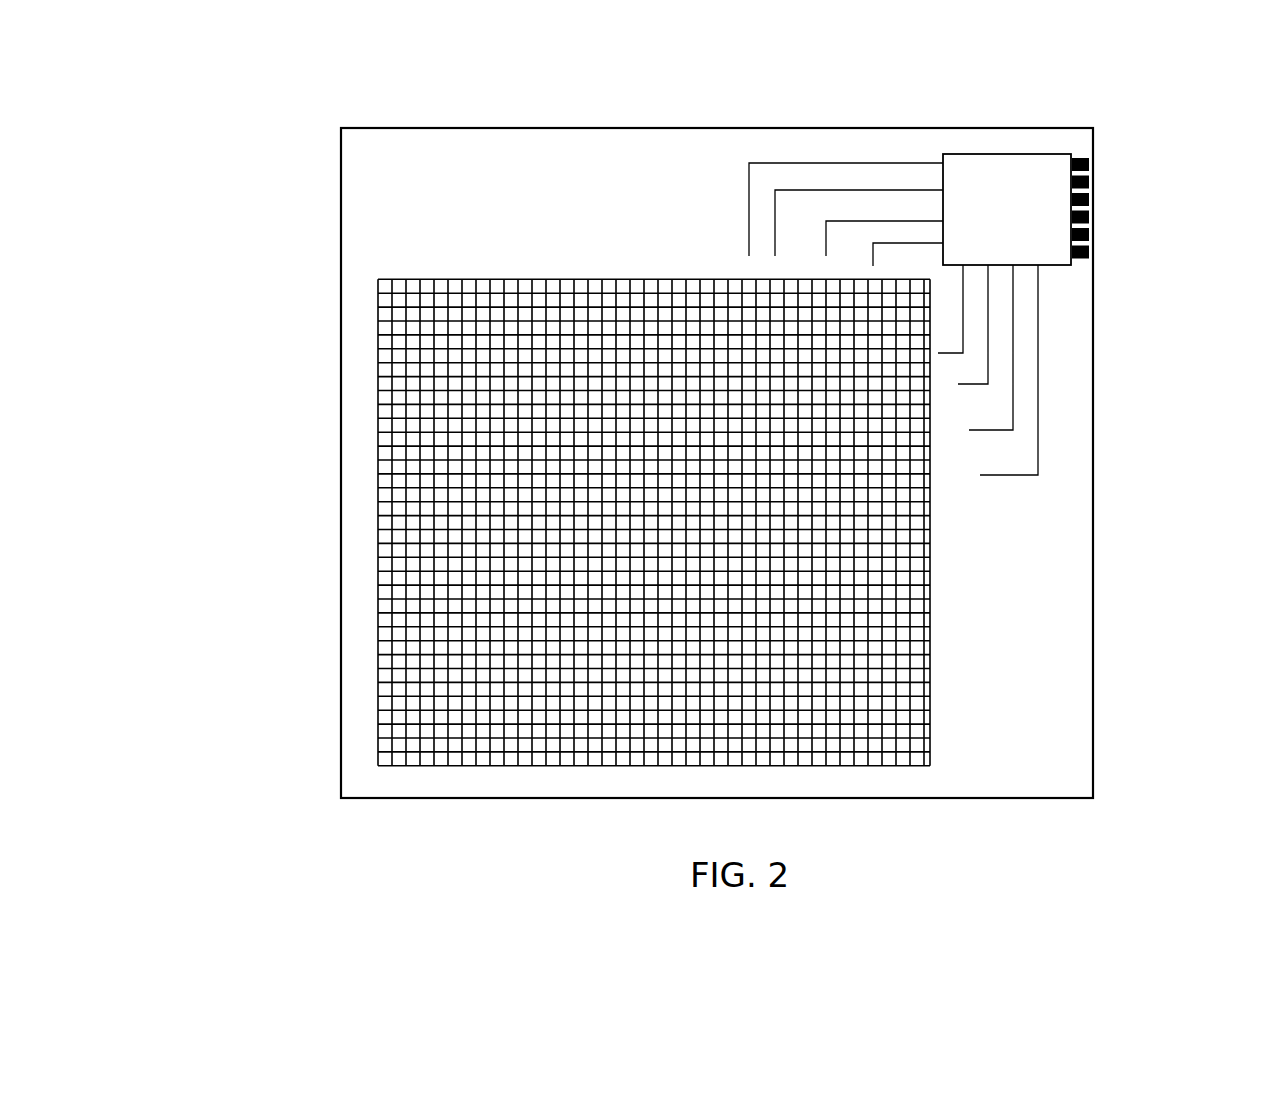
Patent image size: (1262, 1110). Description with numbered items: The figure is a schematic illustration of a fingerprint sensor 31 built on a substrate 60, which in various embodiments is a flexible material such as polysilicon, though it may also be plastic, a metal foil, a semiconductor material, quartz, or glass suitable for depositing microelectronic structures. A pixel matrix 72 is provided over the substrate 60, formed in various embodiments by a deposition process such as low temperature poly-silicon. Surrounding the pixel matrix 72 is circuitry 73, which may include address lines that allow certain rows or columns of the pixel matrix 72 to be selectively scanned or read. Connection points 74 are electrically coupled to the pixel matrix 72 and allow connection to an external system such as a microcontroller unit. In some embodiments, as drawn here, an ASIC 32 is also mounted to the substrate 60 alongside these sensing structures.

The fingerprint sensor 31 is at (316, 113).
The ASIC 32 is at (1021, 165).
The substrate 60 is at (1058, 656).
The pixel matrix 72 is at (363, 401).
The circuitry 73 is at (828, 153).
The connection points 74 is at (1082, 267).